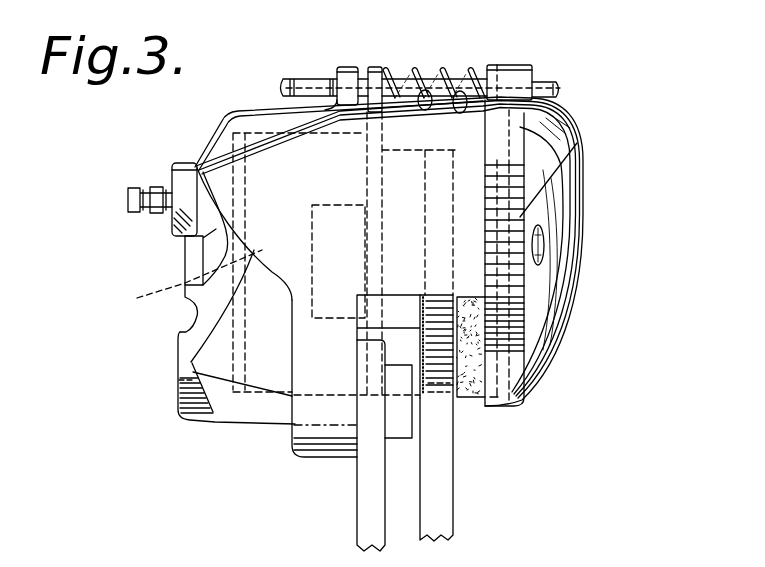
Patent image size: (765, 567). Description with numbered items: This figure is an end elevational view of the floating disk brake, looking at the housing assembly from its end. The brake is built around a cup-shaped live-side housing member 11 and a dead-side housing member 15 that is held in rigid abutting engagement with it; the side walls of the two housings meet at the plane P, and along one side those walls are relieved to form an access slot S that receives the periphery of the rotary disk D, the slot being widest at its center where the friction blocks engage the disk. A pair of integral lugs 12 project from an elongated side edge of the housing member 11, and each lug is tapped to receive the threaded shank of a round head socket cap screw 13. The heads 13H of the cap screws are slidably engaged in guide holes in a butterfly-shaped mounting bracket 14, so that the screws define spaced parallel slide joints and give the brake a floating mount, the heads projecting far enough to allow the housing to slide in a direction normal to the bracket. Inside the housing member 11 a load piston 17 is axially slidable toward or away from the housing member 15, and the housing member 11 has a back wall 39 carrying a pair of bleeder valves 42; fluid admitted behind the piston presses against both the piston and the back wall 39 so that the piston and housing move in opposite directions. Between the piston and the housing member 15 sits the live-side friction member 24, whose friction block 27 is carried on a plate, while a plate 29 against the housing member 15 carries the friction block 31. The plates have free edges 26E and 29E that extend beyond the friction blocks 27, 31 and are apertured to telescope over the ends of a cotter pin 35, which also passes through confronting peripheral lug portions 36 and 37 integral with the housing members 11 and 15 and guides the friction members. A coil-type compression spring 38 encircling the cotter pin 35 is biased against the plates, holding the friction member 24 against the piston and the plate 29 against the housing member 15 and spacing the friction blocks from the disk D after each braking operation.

The live-side housing member 11 is at (208, 137).
The integral lugs 12 is at (305, 438).
The round head socket cap screw 13 is at (422, 425).
The head of cap screw 13H is at (398, 425).
The butterfly-shaped mounting bracket 14 is at (365, 487).
The dead-side housing member 15 is at (588, 178).
The load piston 17 is at (179, 281).
The live-side friction member 24 is at (368, 177).
The free edge of plate 26E is at (373, 67).
The friction block 27 is at (365, 328).
The plate 29 is at (548, 120).
The free edge of plate 29E is at (497, 67).
The friction block 31 is at (467, 363).
The cotter pin 35 is at (414, 104).
The peripheral lug portion 36 is at (346, 66).
The peripheral lug portion 37 is at (535, 72).
The coil-type compression spring 38 is at (464, 112).
The back wall 39 is at (207, 343).
The bleeder valves 42 is at (155, 214).
The plane P is at (478, 240).
The access slot S is at (464, 404).
The rotary disk D is at (442, 507).